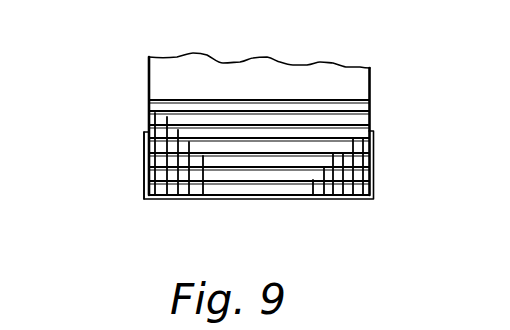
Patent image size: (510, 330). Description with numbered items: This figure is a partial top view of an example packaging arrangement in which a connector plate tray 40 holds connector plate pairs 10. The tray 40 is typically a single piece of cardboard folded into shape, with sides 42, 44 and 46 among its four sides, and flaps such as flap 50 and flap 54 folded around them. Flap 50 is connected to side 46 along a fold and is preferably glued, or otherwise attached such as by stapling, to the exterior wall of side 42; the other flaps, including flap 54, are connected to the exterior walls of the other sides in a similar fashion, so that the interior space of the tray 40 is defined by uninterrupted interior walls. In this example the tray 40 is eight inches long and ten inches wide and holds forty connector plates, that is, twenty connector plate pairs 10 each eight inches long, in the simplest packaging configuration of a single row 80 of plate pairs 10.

The connector plate tray 40 is at (259, 154).
The side 42 is at (371, 86).
The side 44 is at (148, 85).
The connector plate pair 10 is at (379, 103).
The row 80 is at (260, 205).
The flap 50 is at (257, 188).
The side 46 is at (188, 200).
The flap 54 is at (146, 163).